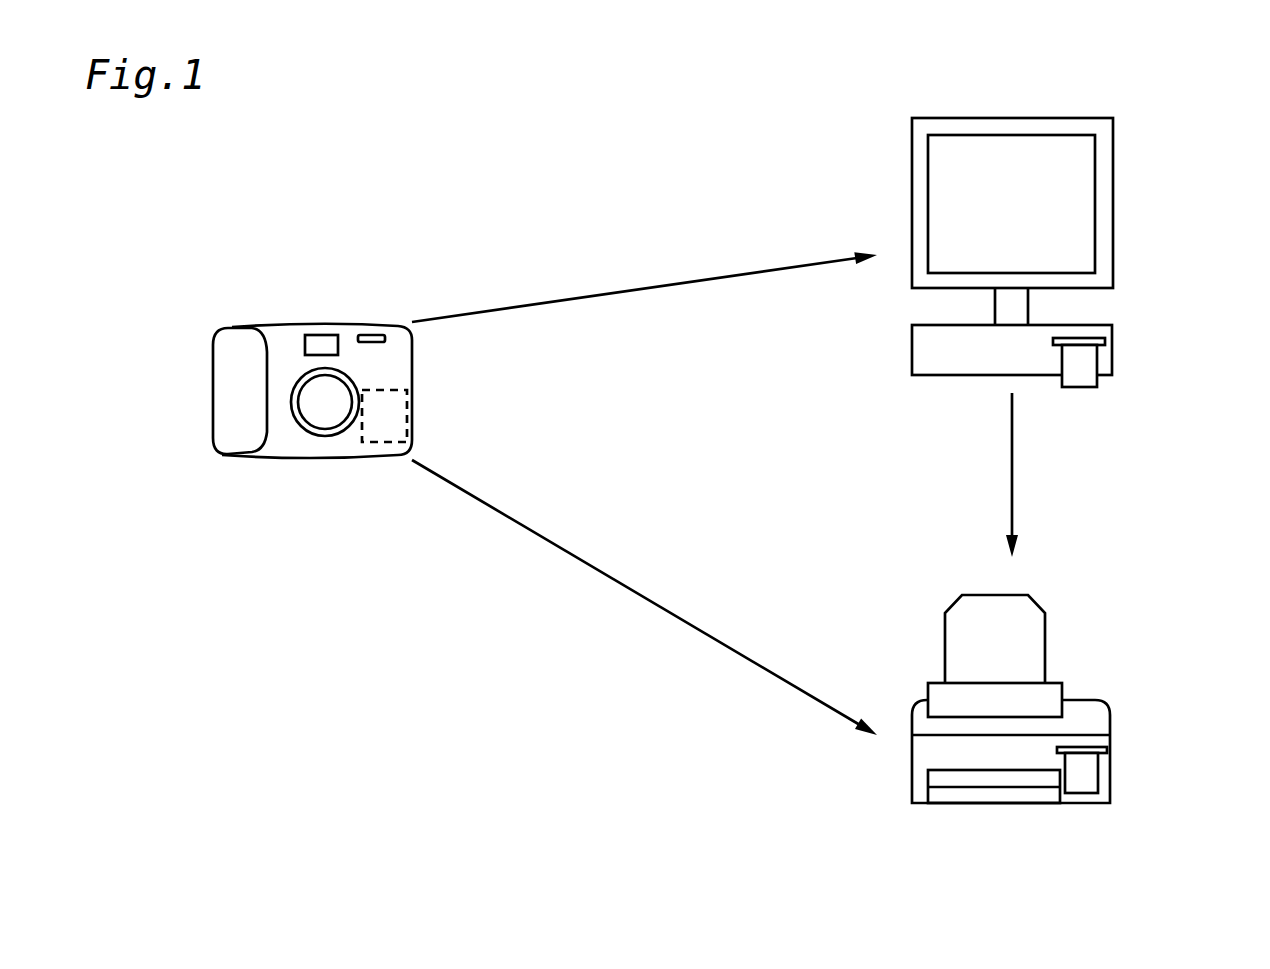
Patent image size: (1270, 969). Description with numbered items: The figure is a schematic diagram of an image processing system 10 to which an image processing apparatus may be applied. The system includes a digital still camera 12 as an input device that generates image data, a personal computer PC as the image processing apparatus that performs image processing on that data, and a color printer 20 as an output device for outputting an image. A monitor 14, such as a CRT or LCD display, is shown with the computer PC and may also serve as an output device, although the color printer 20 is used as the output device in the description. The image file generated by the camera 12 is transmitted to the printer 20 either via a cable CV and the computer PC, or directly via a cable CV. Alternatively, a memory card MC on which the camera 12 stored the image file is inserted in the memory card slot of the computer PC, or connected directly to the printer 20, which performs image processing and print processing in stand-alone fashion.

The image processing system 10 is at (777, 142).
The digital still camera 12 is at (295, 323).
The monitor 14 is at (1113, 212).
The color printer 20 is at (1076, 700).
The personal computer PC is at (1159, 277).
The memory card MC is at (393, 414).
The cable CV is at (652, 271).